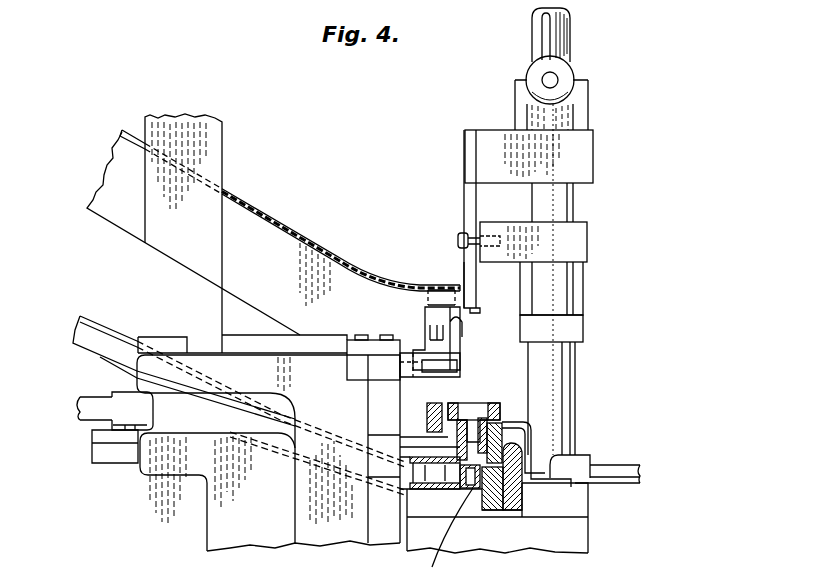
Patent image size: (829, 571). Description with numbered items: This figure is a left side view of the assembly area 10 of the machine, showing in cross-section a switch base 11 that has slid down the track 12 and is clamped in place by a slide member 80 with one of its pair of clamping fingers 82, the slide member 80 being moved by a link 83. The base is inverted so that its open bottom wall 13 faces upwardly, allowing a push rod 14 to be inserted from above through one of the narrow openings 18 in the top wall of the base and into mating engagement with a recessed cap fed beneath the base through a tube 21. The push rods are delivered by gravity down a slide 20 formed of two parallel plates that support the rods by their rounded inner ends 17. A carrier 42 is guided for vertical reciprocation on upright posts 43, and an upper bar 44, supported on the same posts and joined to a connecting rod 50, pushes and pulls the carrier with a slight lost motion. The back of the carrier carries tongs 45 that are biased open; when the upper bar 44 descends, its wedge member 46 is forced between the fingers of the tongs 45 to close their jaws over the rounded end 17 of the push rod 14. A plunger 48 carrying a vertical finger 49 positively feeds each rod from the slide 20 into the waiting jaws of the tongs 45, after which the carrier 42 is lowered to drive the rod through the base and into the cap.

The assembly area 10 is at (652, 296).
The switch base 11 is at (530, 403).
The track 12 is at (427, 410).
The open bottom wall 13 is at (468, 410).
The push rod 14 is at (343, 260).
The rounded inner end 17 is at (460, 283).
The narrow opening 18 is at (520, 440).
The slide 20 is at (273, 250).
The tube 21 is at (107, 325).
The carrier 42 is at (580, 245).
The upright post 43 is at (567, 203).
The upper bar 44 is at (583, 155).
The tongs 45 is at (477, 280).
The wedge member 46 is at (470, 188).
The plunger 48 is at (435, 370).
The vertical finger 49 is at (455, 345).
The connecting rod 50 is at (555, 50).
The slide member 80 is at (573, 503).
The clamping finger 82 is at (530, 415).
The link 83 is at (627, 470).